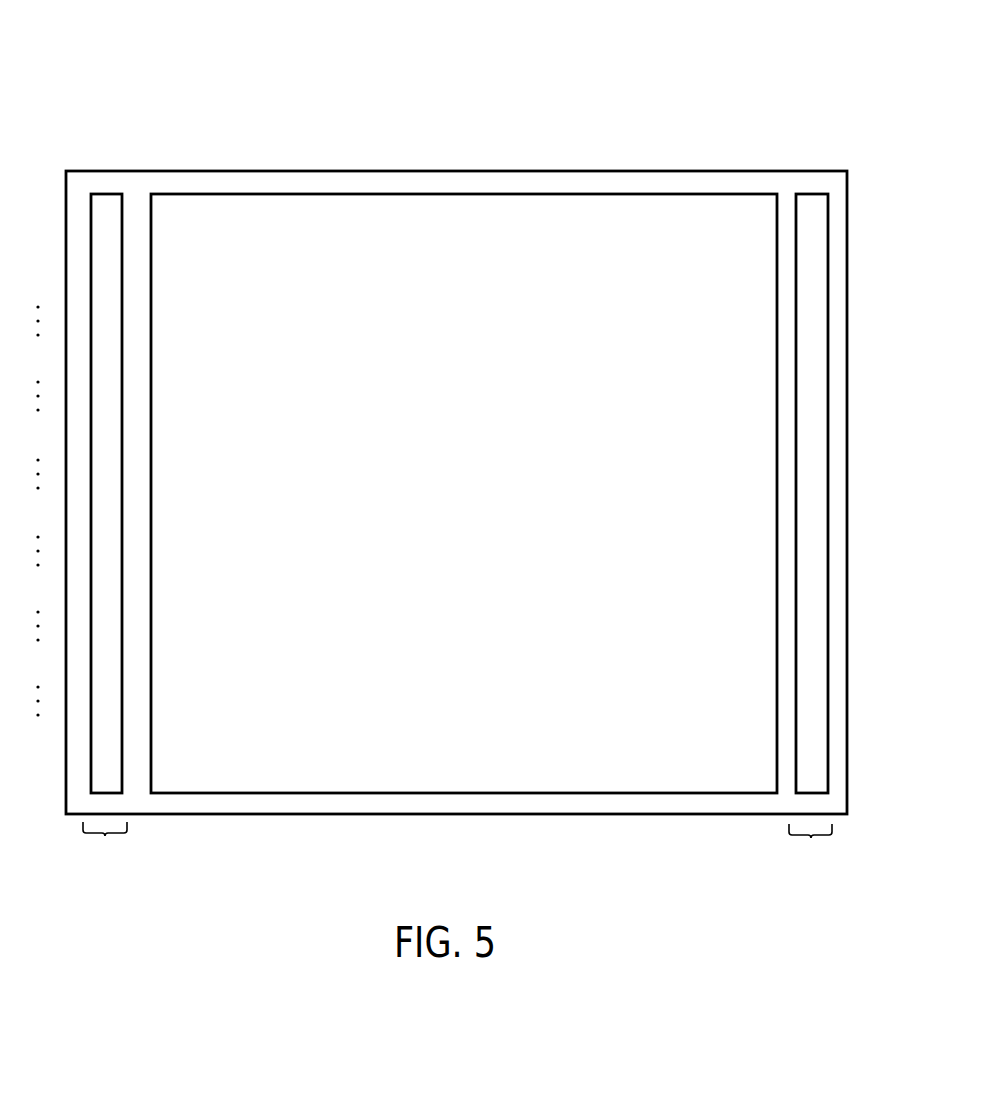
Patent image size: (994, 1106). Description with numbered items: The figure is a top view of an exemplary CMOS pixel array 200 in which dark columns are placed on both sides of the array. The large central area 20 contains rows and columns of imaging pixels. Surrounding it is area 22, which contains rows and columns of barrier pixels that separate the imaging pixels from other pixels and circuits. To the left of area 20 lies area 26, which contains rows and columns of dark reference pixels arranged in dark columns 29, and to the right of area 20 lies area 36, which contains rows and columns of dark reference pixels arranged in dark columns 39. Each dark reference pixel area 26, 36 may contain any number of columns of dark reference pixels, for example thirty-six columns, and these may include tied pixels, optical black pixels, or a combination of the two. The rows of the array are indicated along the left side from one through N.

The CMOS pixel array 200 is at (439, 444).
The area of barrier pixels 22 is at (312, 181).
The area of imaging pixels 20 is at (442, 493).
The dark reference pixel area 26 is at (94, 493).
The dark reference pixel area 36 is at (800, 493).
The dark columns 29 is at (105, 844).
The dark columns 39 is at (810, 846).